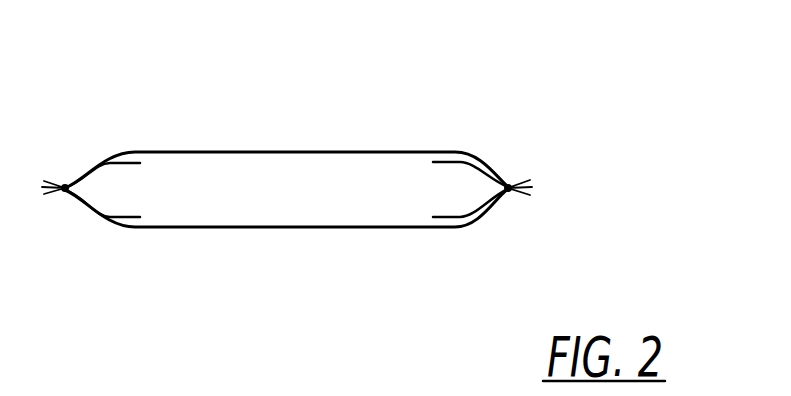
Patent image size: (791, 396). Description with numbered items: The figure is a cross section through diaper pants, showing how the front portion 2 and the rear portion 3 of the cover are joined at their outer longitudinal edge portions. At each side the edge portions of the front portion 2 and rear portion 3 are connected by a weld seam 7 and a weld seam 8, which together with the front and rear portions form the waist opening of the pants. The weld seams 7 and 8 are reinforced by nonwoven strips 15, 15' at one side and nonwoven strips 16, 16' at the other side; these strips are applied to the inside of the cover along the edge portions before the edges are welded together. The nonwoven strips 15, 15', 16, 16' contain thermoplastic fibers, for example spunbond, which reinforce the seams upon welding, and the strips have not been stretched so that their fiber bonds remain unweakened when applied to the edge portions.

The front portion 2 is at (277, 227).
The rear portion 3 is at (275, 152).
The weld seam 7 is at (65, 188).
The weld seam 8 is at (508, 187).
The nonwoven strip 15 is at (131, 111).
The nonwoven strip 15' is at (117, 260).
The nonwoven strip 16 is at (462, 110).
The nonwoven strip 16' is at (459, 260).